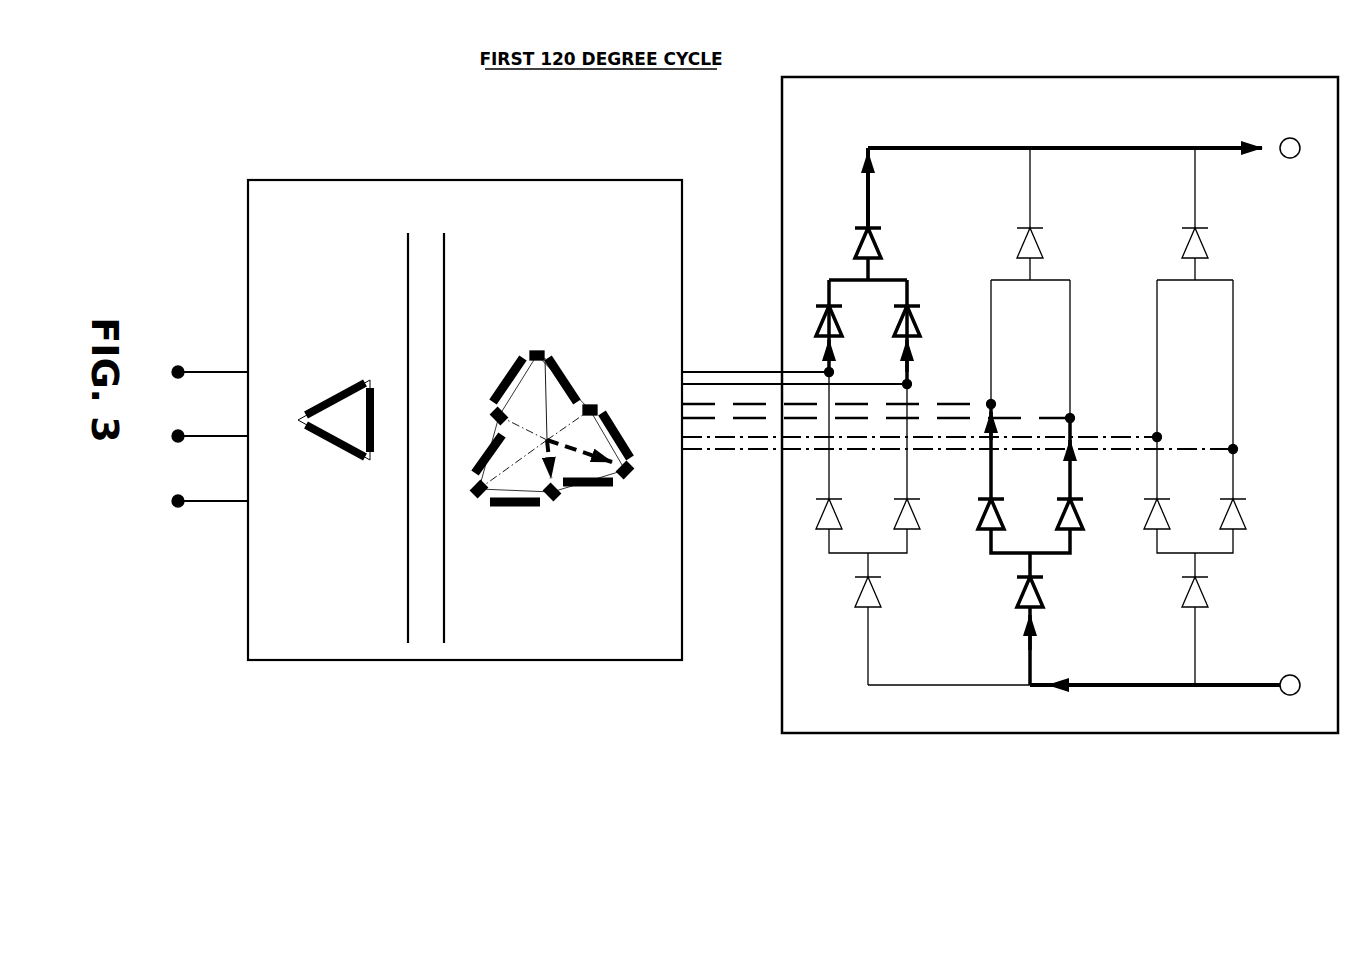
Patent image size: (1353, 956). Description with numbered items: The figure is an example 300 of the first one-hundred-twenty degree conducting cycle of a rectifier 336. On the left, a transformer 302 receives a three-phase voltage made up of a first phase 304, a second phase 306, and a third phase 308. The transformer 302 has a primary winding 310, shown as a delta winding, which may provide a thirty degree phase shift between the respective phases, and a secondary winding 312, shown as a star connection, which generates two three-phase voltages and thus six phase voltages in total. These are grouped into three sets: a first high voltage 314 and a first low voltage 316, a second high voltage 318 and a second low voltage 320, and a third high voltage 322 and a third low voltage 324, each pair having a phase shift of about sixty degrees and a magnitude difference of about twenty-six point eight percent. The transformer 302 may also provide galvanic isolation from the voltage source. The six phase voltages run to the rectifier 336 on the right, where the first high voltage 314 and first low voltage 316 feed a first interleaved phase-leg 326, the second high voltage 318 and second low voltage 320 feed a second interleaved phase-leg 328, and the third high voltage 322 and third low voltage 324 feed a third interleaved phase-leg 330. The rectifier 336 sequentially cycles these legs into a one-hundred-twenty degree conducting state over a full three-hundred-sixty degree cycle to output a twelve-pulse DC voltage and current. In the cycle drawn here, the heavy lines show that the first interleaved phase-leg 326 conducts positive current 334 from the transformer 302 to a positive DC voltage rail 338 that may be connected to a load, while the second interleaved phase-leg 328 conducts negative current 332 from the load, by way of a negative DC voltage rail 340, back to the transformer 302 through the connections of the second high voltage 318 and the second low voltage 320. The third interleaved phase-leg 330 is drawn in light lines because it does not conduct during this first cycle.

The example of a first 120 degree cycle 300 is at (358, 56).
The transformer 302 is at (505, 180).
The first phase 304 is at (215, 372).
The second phase 306 is at (215, 436).
The third phase 308 is at (215, 501).
The primary winding 310 is at (337, 376).
The secondary winding 312 is at (530, 337).
The first high voltage 314 is at (547, 358).
The first low voltage 316 is at (572, 425).
The second high voltage 318 is at (620, 482).
The second low voltage 320 is at (553, 477).
The third high voltage 322 is at (510, 466).
The third low voltage 324 is at (512, 428).
The first interleaved phase-leg 326 is at (900, 253).
The second interleaved phase-leg 328 is at (1060, 246).
The third interleaved phase-leg 330 is at (1226, 250).
The negative current 332 is at (1068, 685).
The positive current 334 is at (870, 200).
The rectifier 336 is at (1147, 77).
The positive DC voltage rail 338 is at (912, 148).
The negative DC voltage rail 340 is at (905, 685).